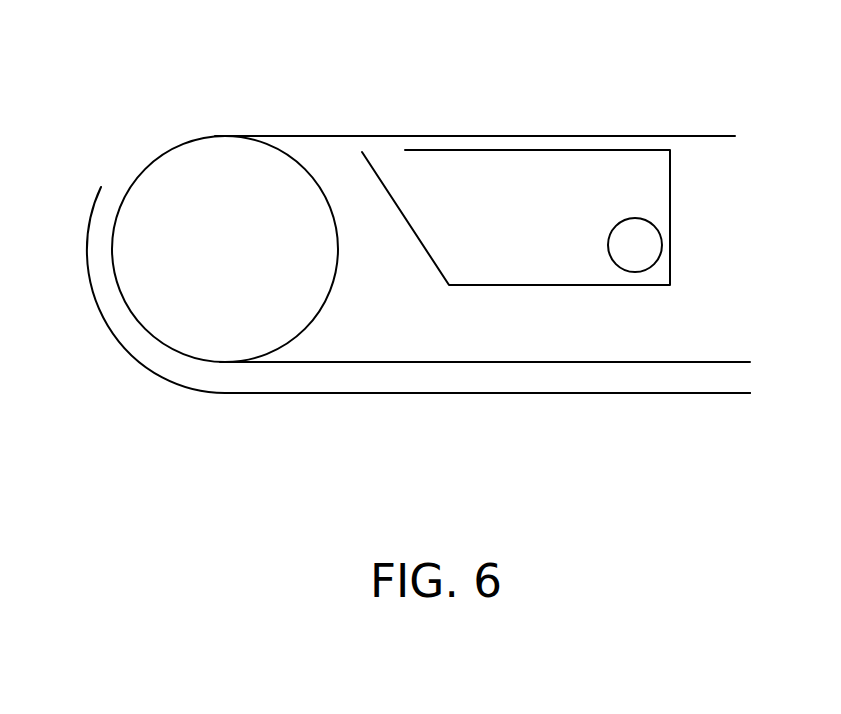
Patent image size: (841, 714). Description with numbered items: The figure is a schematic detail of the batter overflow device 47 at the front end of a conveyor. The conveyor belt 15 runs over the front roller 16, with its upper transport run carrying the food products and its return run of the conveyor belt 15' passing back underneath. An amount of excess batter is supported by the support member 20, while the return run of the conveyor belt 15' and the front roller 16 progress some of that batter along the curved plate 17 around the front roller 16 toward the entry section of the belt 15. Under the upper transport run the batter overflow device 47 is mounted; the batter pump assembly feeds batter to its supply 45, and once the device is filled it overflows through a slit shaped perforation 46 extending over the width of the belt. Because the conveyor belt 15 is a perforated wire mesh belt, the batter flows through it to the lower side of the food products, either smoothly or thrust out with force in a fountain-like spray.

The conveyor belt 15 is at (475, 93).
The return run of the conveyor belt 15' is at (485, 416).
The front roller 16 is at (207, 182).
The curved plate 17 is at (120, 328).
The support member 20 is at (367, 393).
The supply 45 is at (640, 244).
The slit shaped perforation 46 is at (389, 165).
The batter overflow device 47 is at (693, 179).